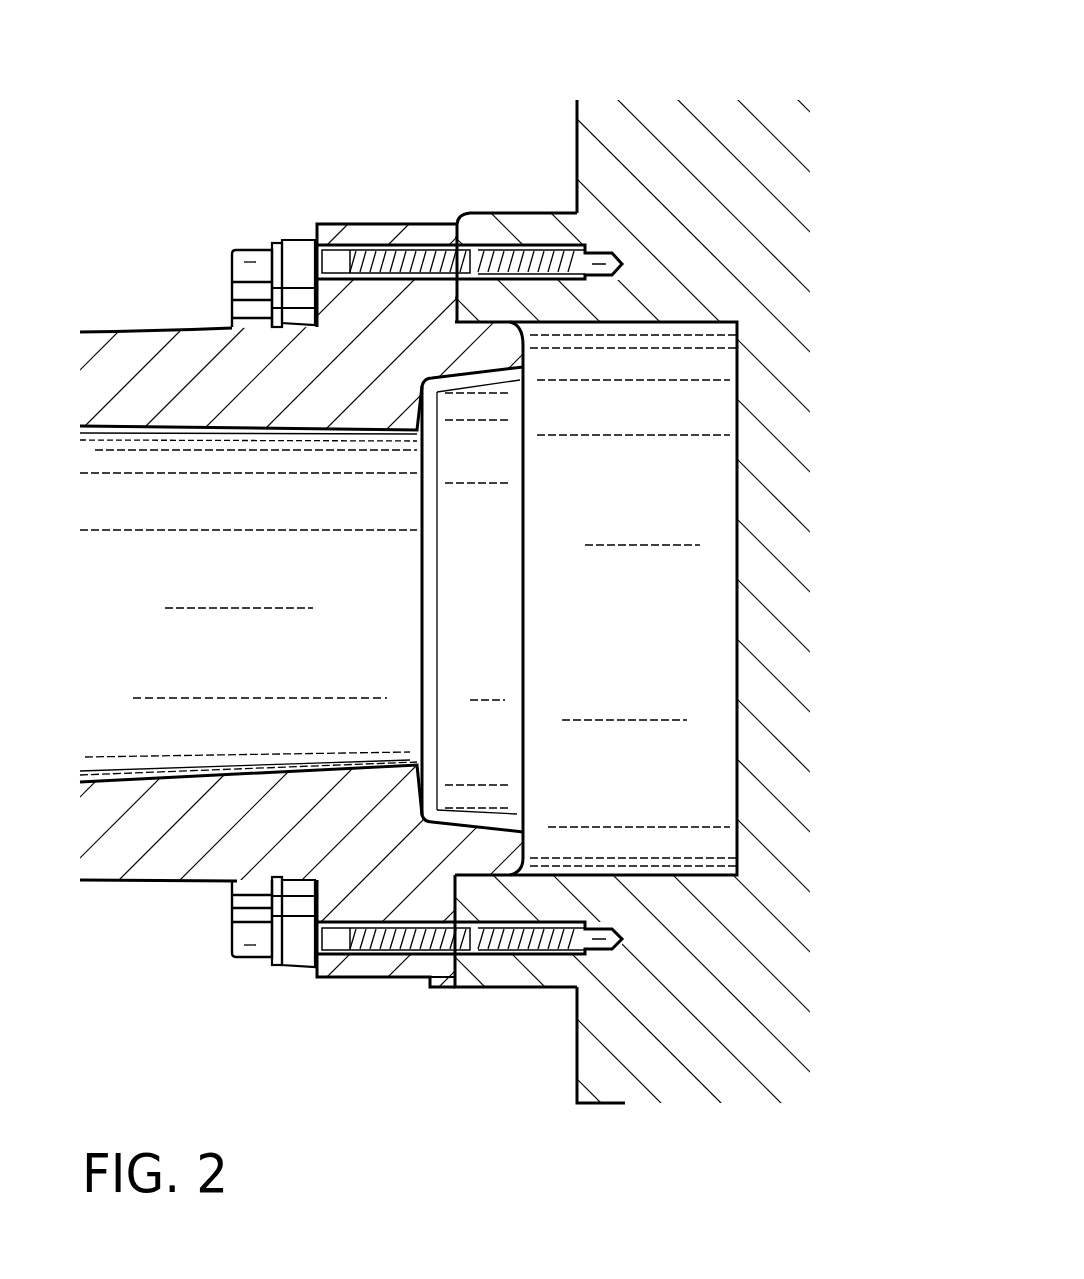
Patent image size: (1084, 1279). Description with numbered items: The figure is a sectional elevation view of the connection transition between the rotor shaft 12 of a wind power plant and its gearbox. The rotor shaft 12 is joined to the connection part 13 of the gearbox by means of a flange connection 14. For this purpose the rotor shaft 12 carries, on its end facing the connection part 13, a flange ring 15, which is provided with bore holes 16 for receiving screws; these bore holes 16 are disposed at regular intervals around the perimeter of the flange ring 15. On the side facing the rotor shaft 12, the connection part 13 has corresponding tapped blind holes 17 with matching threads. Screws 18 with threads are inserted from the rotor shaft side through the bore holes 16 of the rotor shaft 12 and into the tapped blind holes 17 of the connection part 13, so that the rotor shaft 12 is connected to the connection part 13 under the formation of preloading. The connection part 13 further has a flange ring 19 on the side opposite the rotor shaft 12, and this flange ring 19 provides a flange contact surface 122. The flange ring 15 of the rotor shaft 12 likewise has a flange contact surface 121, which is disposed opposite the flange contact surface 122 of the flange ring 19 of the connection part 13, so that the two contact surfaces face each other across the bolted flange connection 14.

The rotor shaft 12 is at (187, 356).
The connection part 13 is at (640, 148).
The flange connection 14 is at (437, 221).
The flange ring 15 is at (297, 263).
The bore holes 16 is at (333, 235).
The tapped blind holes 17 is at (533, 245).
The screws 18 is at (273, 247).
The flange ring 19 is at (510, 217).
The flange contact surface 121 is at (462, 224).
The flange contact surface 122 is at (397, 242).